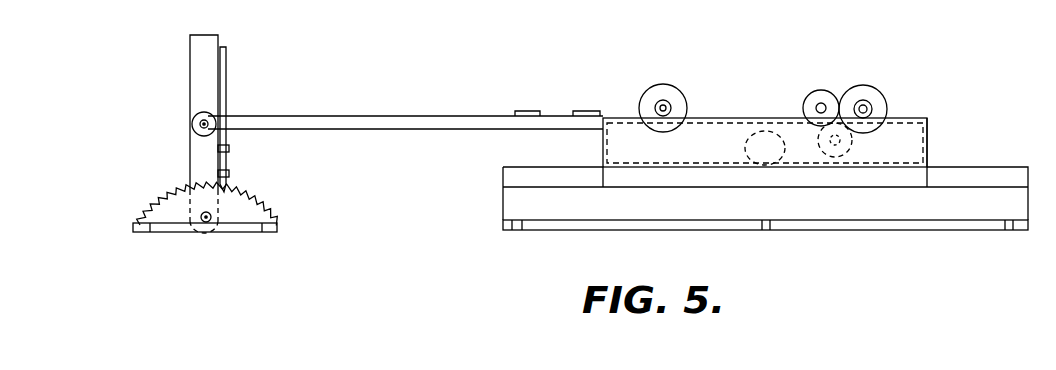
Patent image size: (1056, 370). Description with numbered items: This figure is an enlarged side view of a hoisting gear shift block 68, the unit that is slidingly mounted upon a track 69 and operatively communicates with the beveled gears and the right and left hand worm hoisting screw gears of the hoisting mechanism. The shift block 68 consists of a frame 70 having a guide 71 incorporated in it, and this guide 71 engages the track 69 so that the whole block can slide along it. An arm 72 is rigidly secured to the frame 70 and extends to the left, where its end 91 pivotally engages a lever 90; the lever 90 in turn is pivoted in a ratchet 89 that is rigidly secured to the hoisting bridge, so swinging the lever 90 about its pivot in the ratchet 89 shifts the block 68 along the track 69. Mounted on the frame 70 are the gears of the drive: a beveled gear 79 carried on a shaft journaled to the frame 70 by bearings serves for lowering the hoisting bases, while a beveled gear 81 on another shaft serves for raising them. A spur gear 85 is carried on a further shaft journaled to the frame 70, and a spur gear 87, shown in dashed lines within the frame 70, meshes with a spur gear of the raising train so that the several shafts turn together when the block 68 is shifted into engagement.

The hoisting gear shift block 68 is at (934, 141).
The track 69 is at (948, 220).
The frame 70 is at (603, 140).
The guide 71 is at (892, 173).
The arm 72 is at (365, 121).
The beveled gear 79 is at (678, 100).
The beveled gear 81 is at (872, 97).
The spur gear 85 is at (806, 99).
The spur gear 87 is at (818, 140).
The ratchet 89 is at (175, 226).
The lever 90 is at (202, 162).
The end of arm 91 is at (214, 113).